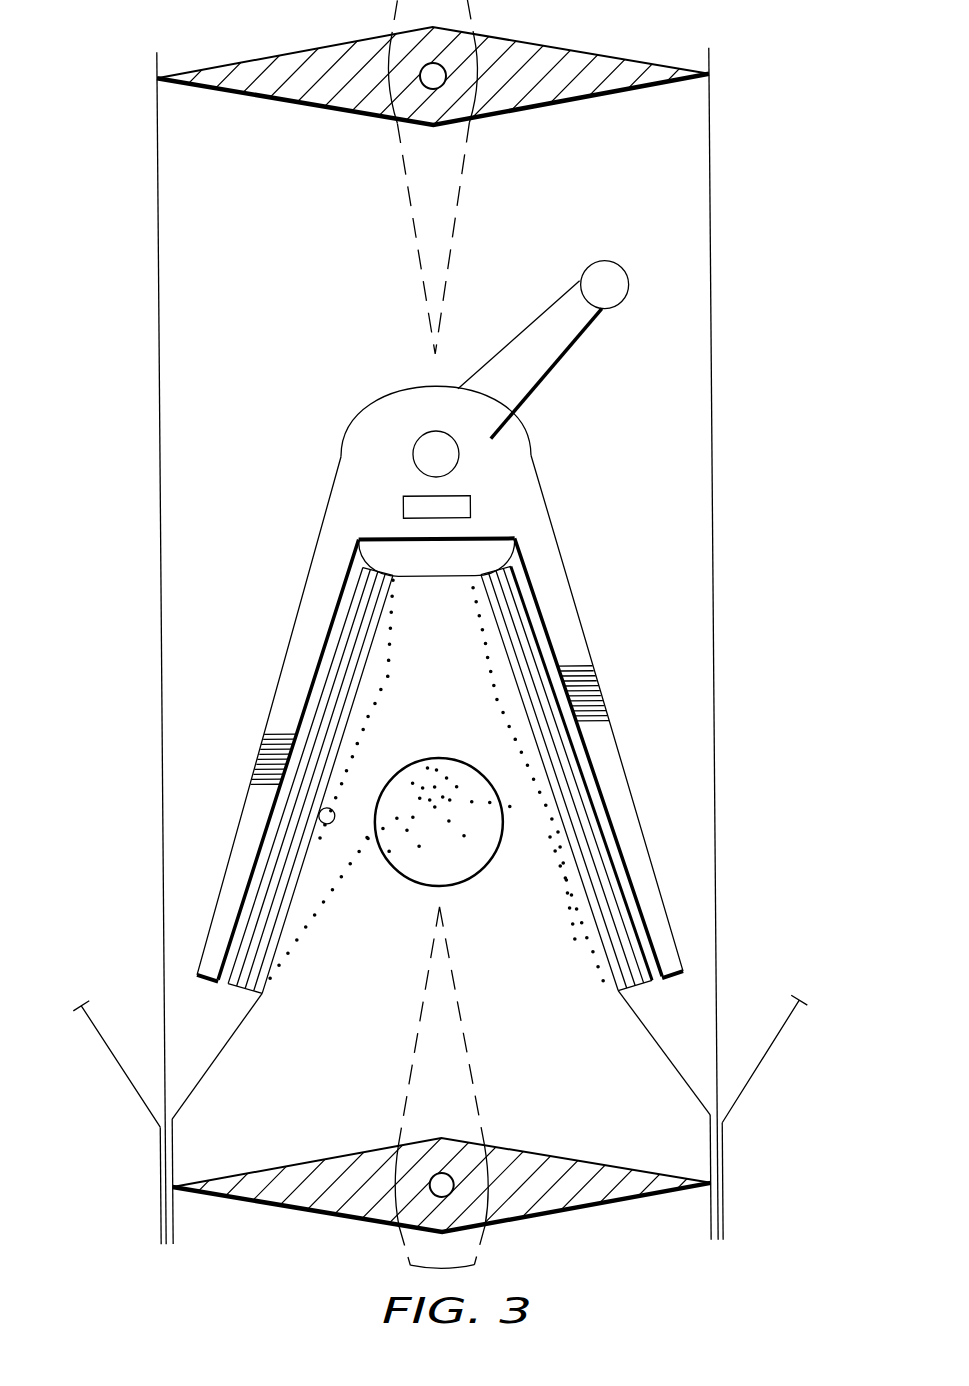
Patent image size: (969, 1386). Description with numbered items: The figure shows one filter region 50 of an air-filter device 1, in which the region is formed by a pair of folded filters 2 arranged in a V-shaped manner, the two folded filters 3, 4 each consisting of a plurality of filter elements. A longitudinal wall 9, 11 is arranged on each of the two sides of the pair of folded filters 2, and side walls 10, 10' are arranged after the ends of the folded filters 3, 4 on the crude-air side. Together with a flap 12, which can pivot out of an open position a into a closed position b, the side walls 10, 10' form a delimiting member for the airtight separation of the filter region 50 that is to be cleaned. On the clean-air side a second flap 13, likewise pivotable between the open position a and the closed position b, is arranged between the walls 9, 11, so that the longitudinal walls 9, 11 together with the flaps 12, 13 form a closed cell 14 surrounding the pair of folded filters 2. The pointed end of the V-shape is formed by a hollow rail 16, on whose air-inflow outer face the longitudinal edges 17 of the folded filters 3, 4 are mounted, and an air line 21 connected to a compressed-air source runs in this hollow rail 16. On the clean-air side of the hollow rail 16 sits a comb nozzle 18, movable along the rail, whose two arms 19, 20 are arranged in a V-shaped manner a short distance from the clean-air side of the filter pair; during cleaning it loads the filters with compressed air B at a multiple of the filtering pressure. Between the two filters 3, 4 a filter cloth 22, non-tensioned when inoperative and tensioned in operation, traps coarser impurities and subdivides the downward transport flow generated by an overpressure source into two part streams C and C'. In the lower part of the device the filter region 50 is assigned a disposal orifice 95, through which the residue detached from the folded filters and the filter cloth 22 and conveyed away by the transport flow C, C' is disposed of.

The air-filter device 1 is at (287, 589).
The pair of folded filters 2 is at (500, 763).
The folded filter 3 is at (325, 864).
The folded filter 4 is at (542, 853).
The longitudinal wall 9 is at (192, 648).
The side wall 10 is at (236, 1056).
The side wall 10' is at (646, 1053).
The longitudinal wall 11 is at (747, 643).
The flap 12 is at (171, 1126).
The second flap 13 is at (93, 33).
The closed cell 14 is at (486, 645).
The hollow rail 16 is at (437, 589).
The longitudinal edges 17 is at (439, 749).
The comb nozzle 18 is at (437, 682).
The arm 19 is at (248, 730).
The arm 20 is at (617, 696).
The air line 21 is at (520, 368).
The filter cloth 22 is at (410, 1088).
The filter region 50 is at (436, 779).
The disposal orifice 95 is at (438, 821).
The open position a is at (433, 532).
The closed position b is at (437, 654).
The compressed air B is at (431, 709).
The transport flow C is at (438, 781).
The transport flow part stream C' is at (442, 856).